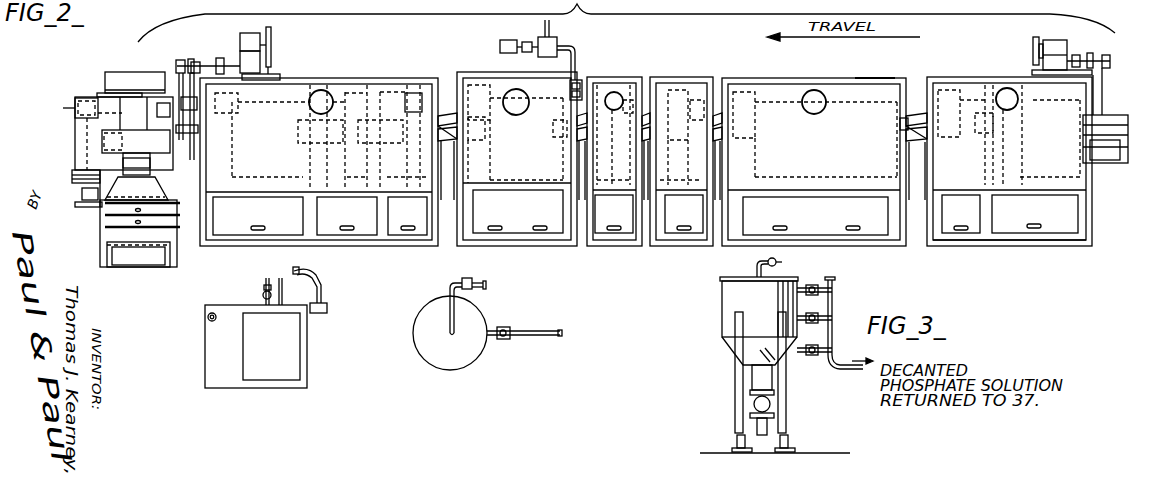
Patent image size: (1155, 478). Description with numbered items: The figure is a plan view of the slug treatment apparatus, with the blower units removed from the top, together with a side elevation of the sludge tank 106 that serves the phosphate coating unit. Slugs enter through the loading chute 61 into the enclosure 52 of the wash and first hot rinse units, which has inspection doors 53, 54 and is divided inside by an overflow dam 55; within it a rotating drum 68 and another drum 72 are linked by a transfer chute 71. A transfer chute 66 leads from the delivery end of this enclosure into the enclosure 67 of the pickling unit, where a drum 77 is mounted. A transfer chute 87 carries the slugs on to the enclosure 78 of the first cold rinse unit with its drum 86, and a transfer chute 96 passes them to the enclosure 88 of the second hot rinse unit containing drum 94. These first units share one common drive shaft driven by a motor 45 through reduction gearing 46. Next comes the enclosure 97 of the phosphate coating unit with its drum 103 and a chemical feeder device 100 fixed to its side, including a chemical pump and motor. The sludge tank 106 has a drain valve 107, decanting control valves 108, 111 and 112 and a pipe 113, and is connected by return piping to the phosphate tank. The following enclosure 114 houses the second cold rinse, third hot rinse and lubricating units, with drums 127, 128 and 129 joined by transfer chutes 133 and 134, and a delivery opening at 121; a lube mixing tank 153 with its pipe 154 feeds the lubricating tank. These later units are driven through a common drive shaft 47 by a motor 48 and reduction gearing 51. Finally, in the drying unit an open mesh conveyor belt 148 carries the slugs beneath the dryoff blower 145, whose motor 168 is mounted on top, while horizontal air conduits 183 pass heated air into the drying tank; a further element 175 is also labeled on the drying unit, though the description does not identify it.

In FIG. 2, the motor 45 is at (1053, 42).
In FIG. 2, the reduction gearing 46 is at (1063, 46).
In FIG. 2, the common drive shaft 47 is at (449, 143).
In FIG. 2, the motor 48 is at (250, 53).
In FIG. 2, the reduction gearing 51 is at (246, 40).
In FIG. 2, the enclosure 52 is at (1023, 251).
In FIG. 2, the inspection door 53 is at (1045, 224).
In FIG. 2, the inspection door 54 is at (963, 235).
In FIG. 2, the overflow dam 55 is at (983, 210).
In FIG. 2, the loading chute 61 is at (1118, 165).
In FIG. 2, the transfer chute 66 is at (918, 115).
In FIG. 2, the enclosure 67 is at (887, 72).
In FIG. 2, the rotating drum 68 is at (1031, 96).
In FIG. 2, the transfer chute 71 is at (1016, 137).
In FIG. 2, the drum 72 is at (966, 95).
In FIG. 2, the drum 77 is at (786, 92).
In FIG. 2, the enclosure 78 is at (686, 247).
In FIG. 2, the drum 86 is at (681, 88).
In FIG. 2, the transfer chute 87 is at (735, 120).
In FIG. 2, the enclosure 88 is at (614, 247).
In FIG. 2, the drum 94 is at (626, 75).
In FIG. 2, the transfer chute 96 is at (652, 110).
In FIG. 2, the enclosure 97 is at (478, 247).
In FIG. 2, the chemical feeder device 100 is at (583, 67).
In FIG. 2, the drum 103 is at (473, 85).
In FIG. 2, the sludge tank 106 is at (453, 360).
In FIG. 3, the drain valve 107 is at (771, 404).
In FIG. 2, the decanting control valve 108 is at (503, 339).
In FIG. 3, the decanting control valve 108 is at (812, 284).
In FIG. 3, the decanting control valve 111 is at (820, 314).
In FIG. 3, the decanting control valve 112 is at (835, 363).
In FIG. 2, the pipe 113 is at (472, 285).
In FIG. 3, the pipe 113 is at (756, 262).
In FIG. 2, the enclosure 114 is at (408, 247).
In FIG. 2, the delivery opening 121 is at (193, 163).
In FIG. 2, the drum 127 is at (409, 91).
In FIG. 2, the drum 128 is at (358, 92).
In FIG. 2, the drum 129 is at (284, 92).
In FIG. 2, the transfer chute 133 is at (396, 84).
In FIG. 2, the transfer chute 134 is at (335, 93).
In FIG. 2, the dryoff blower 145 is at (136, 141).
In FIG. 2, the open mesh conveyor belt 148 is at (77, 145).
In FIG. 2, the lube mixing tank 153 is at (314, 342).
In FIG. 2, the pipe 154 is at (320, 283).
In FIG. 2, the motor 168 is at (75, 104).
In FIG. 2, the tray 175 is at (138, 258).
In FIG. 2, the horizontal air conduits 183 is at (162, 267).